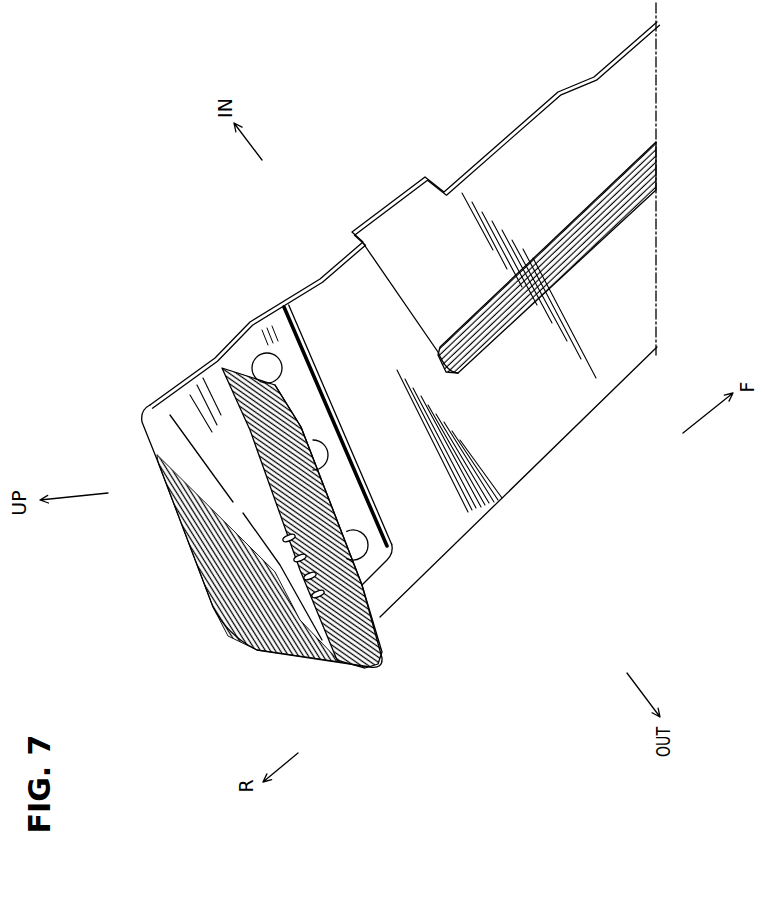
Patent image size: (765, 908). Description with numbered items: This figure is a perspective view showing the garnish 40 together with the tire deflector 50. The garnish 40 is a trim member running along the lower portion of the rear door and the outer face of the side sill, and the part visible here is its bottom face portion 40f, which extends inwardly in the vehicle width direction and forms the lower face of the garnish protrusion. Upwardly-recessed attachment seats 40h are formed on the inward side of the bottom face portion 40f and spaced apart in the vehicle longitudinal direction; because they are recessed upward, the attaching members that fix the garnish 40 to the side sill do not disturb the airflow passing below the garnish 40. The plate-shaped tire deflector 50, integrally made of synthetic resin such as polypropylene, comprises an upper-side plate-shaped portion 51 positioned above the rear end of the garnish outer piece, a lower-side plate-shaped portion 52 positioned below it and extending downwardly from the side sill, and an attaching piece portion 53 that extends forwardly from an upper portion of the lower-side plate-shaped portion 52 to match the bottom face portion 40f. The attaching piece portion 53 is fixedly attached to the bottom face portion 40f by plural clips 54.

The garnish 40 is at (561, 457).
The attachment seats 40h is at (562, 148).
The bottom face portion 40f is at (512, 390).
The tire deflector 50 is at (272, 676).
The upper-side plate-shaped portion 51 is at (228, 603).
The lower-side plate-shaped portion 52 is at (312, 500).
The attaching piece portion 53 is at (310, 393).
The clips 54 is at (262, 360).